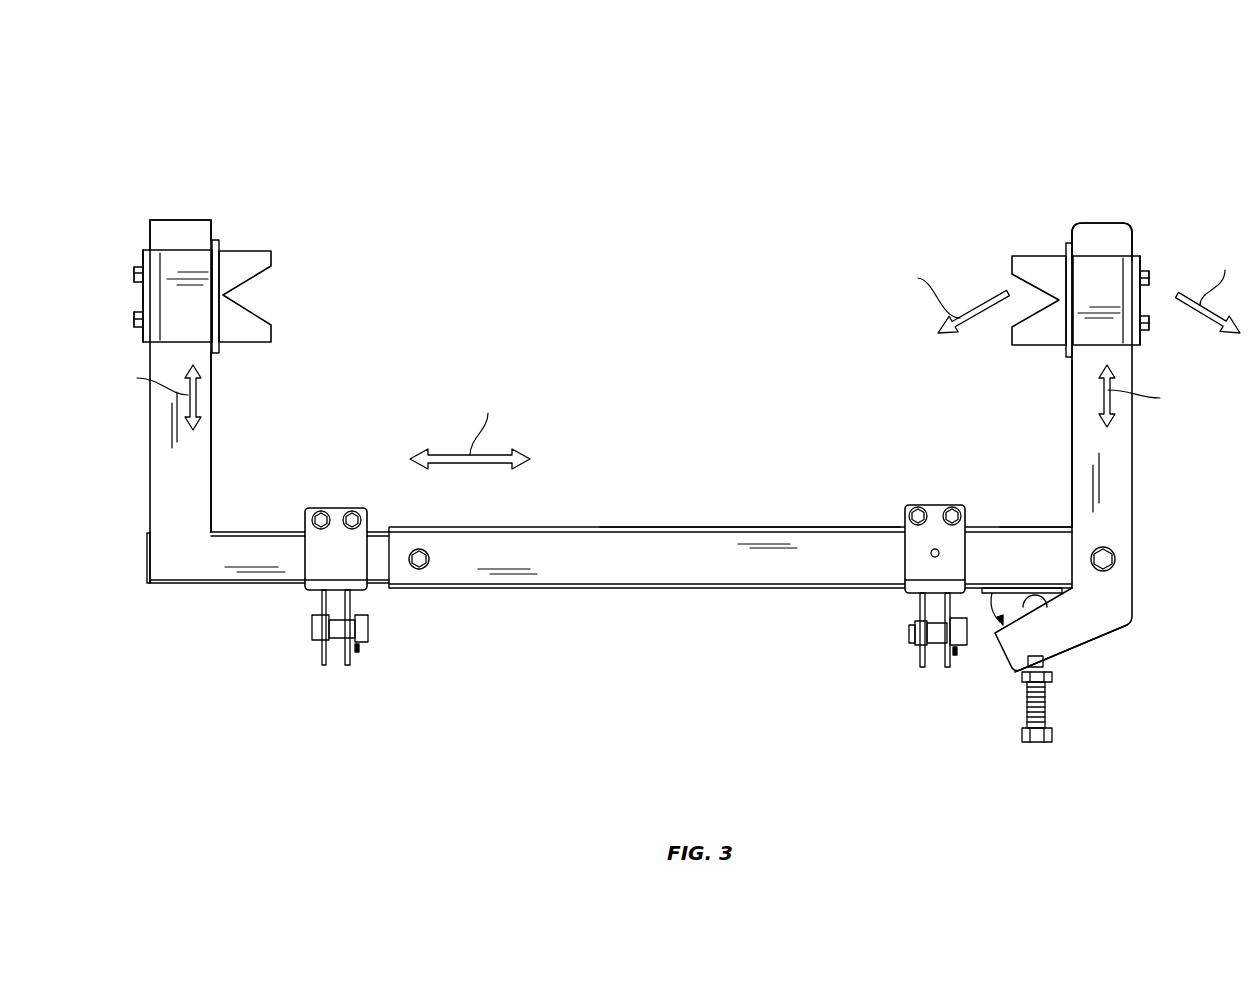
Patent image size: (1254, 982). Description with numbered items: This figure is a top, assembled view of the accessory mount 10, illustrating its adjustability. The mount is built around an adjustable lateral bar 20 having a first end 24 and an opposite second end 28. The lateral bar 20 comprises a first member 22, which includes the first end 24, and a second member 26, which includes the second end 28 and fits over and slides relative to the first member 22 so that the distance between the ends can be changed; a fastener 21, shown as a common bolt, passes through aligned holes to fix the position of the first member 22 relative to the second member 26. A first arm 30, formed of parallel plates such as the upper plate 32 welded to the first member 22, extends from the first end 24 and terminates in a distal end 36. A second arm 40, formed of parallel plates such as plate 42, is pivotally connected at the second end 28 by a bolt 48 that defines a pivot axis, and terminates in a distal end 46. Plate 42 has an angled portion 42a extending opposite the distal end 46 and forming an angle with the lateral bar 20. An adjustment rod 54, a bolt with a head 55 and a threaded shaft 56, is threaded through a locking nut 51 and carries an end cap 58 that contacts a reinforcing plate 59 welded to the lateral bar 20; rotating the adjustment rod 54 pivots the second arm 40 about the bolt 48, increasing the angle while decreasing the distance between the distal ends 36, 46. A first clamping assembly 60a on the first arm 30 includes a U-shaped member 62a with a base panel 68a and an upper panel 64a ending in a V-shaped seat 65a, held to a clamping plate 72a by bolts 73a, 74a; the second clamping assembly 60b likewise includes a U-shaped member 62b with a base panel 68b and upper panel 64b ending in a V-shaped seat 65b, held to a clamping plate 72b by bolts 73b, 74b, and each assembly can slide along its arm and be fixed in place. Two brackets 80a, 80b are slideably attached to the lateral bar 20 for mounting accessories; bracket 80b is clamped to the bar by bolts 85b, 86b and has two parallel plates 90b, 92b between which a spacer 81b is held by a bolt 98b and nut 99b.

The accessory mount 10 is at (133, 126).
The lateral bar 20 is at (573, 588).
The fastener 21 is at (422, 568).
The first member 22 is at (265, 532).
The first end 24 is at (147, 565).
The second member 26 is at (688, 527).
The second end 28 is at (1070, 527).
The first arm 30 is at (150, 457).
The upper plate 32 is at (211, 440).
The distal end 36 is at (165, 219).
The second arm 40 is at (1133, 455).
The parallel plate 42 is at (1072, 437).
The angled portion 42a is at (1103, 645).
The distal end 46 is at (1100, 223).
The bolt 48 is at (1117, 559).
The locking nut 51 is at (1055, 675).
The adjustment rod 54 is at (1027, 695).
The head 55 is at (1053, 735).
The threaded shaft 56 is at (1048, 705).
The end cap 58 is at (1035, 597).
The reinforcing plate 59 is at (985, 595).
The first clamping assembly 60a is at (258, 216).
The second clamping assembly 60b is at (1038, 231).
The U-shaped member 62a is at (143, 255).
The U-shaped member 62b is at (1142, 258).
The upper panel 64a is at (172, 262).
The upper panel 64b is at (1112, 262).
The V-shaped seat 65a is at (271, 272).
The V-shaped seat 65b is at (1012, 272).
The base panel 68a is at (143, 295).
The base panel 68b is at (1142, 300).
The clamping plate 72a is at (219, 330).
The clamping plate 72b is at (1064, 330).
The bolt 73a is at (134, 273).
The bolt 73b is at (1150, 280).
The bolt 74a is at (134, 320).
The bolt 74b is at (1150, 328).
The bracket 80a is at (367, 547).
The bracket 80b is at (905, 547).
The spacer 81b is at (932, 622).
The bolt 85b is at (918, 507).
The bolt 86b is at (952, 507).
The parallel plate 90b is at (920, 668).
The parallel plate 92b is at (946, 665).
The bolt 98b is at (909, 630).
The nut 99b is at (955, 655).